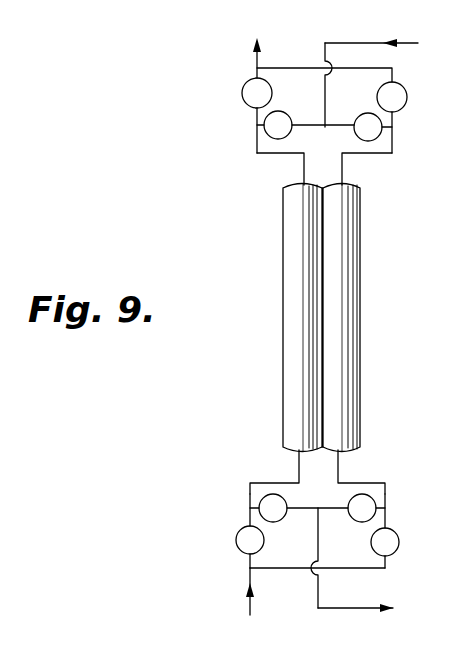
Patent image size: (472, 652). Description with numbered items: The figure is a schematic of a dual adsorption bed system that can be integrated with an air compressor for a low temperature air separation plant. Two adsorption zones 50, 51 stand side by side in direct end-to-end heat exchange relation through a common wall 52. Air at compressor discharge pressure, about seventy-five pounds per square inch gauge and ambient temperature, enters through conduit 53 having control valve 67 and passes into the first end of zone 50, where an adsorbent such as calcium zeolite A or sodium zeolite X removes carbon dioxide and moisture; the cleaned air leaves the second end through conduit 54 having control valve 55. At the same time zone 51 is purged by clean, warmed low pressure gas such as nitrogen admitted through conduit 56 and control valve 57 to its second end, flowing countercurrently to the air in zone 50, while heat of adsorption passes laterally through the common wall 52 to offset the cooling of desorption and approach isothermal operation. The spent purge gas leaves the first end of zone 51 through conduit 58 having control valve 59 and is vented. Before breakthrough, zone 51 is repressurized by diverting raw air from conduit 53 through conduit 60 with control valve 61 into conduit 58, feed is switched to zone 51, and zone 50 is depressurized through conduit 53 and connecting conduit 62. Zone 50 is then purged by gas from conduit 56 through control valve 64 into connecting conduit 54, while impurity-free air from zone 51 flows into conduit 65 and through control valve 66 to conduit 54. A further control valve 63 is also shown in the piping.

The adsorption zone 50 is at (285, 298).
The adsorption zone 51 is at (347, 307).
The common wall 52 is at (322, 365).
The conduit 53 is at (248, 603).
The conduit 54 is at (273, 153).
The control valve 55 is at (242, 93).
The conduit 56 is at (417, 46).
The control valve 57 is at (378, 137).
The conduit 58 is at (338, 463).
The control valve 59 is at (374, 501).
The conduit 60 is at (292, 568).
The control valve 61 is at (408, 521).
The connecting conduit 62 is at (304, 508).
The valve 63 is at (265, 502).
The control valve 64 is at (266, 130).
The conduit 65 is at (380, 154).
The control valve 66 is at (407, 97).
The control valve 67 is at (236, 540).